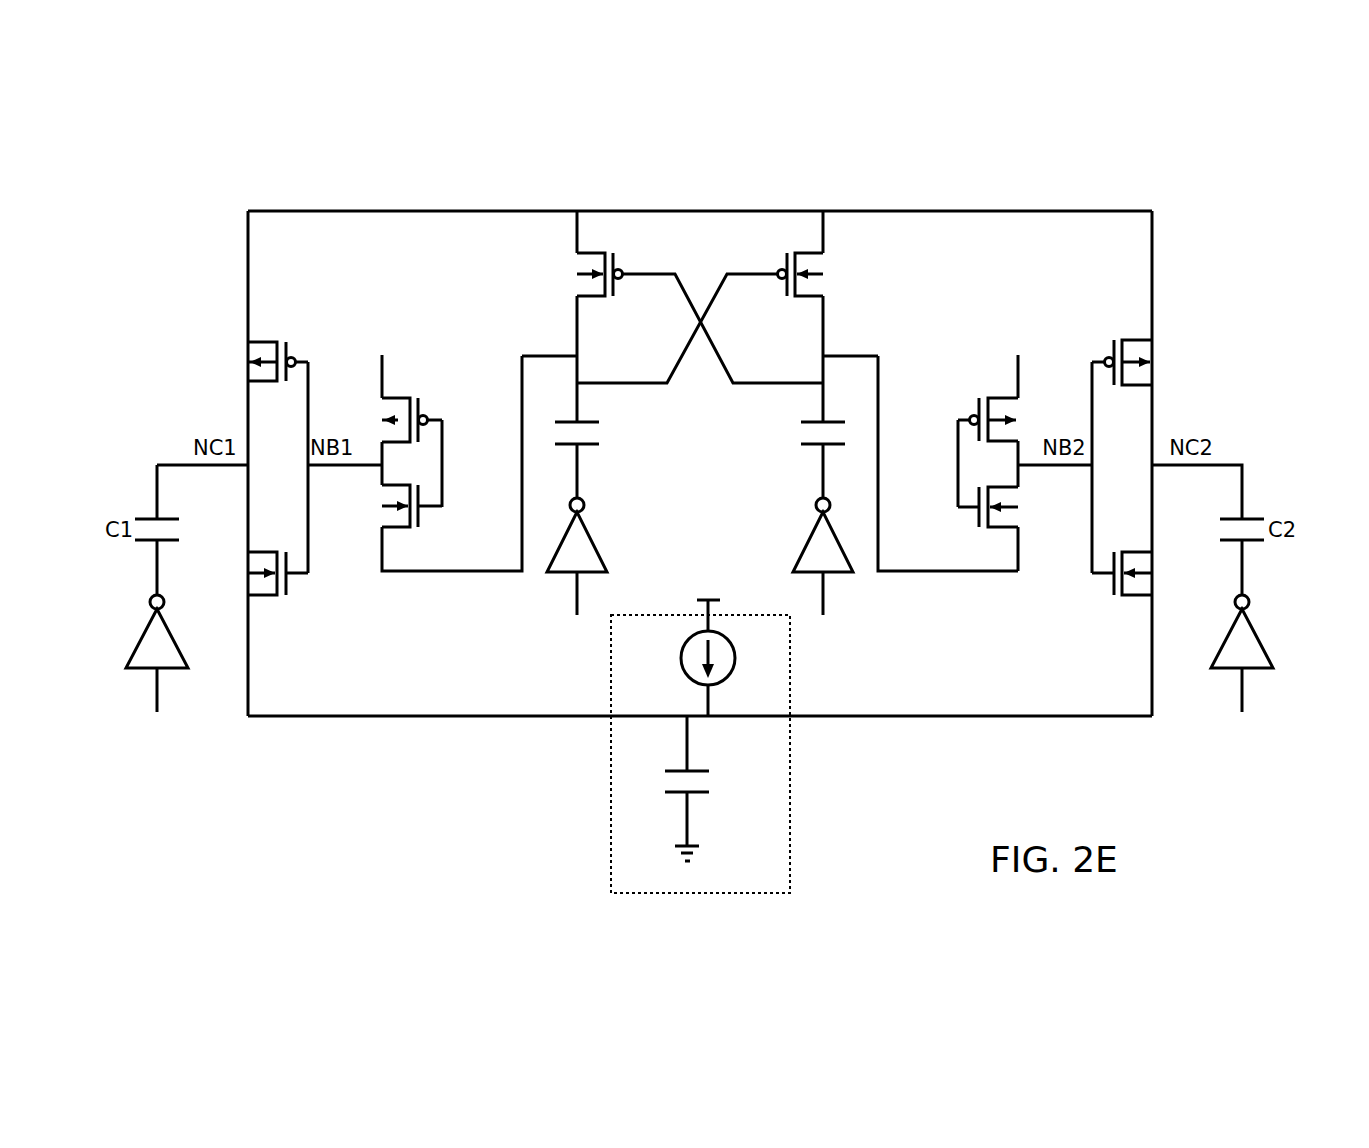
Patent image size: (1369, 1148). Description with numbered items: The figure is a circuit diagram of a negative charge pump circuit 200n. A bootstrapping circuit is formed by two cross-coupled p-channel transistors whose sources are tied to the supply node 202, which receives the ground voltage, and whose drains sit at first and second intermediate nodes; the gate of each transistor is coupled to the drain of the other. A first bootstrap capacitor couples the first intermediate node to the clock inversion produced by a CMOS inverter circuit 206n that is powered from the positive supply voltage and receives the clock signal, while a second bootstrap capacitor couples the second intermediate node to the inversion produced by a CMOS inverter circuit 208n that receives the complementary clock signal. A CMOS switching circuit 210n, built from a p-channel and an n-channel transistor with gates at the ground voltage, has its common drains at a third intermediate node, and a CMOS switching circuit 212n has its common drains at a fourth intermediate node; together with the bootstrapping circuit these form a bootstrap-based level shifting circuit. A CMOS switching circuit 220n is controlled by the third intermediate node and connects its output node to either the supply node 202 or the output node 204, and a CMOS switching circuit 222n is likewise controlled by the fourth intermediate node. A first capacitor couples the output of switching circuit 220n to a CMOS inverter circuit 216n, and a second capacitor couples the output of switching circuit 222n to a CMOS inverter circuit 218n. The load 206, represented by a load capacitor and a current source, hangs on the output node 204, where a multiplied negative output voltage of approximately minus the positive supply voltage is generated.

The negative charge pump circuit 200n is at (878, 116).
The supply node 202 is at (507, 209).
The output node 204 is at (455, 718).
The load 206 is at (648, 895).
The CMOS inverter circuit 206n is at (604, 556).
The CMOS inverter circuit 208n is at (806, 542).
The CMOS switching circuit 210n is at (421, 386).
The CMOS switching circuit 212n is at (986, 379).
The CMOS inverter circuit 216n is at (141, 641).
The CMOS inverter circuit 218n is at (1266, 655).
The CMOS switching circuit 220n is at (293, 325).
The CMOS switching circuit 222n is at (1108, 326).